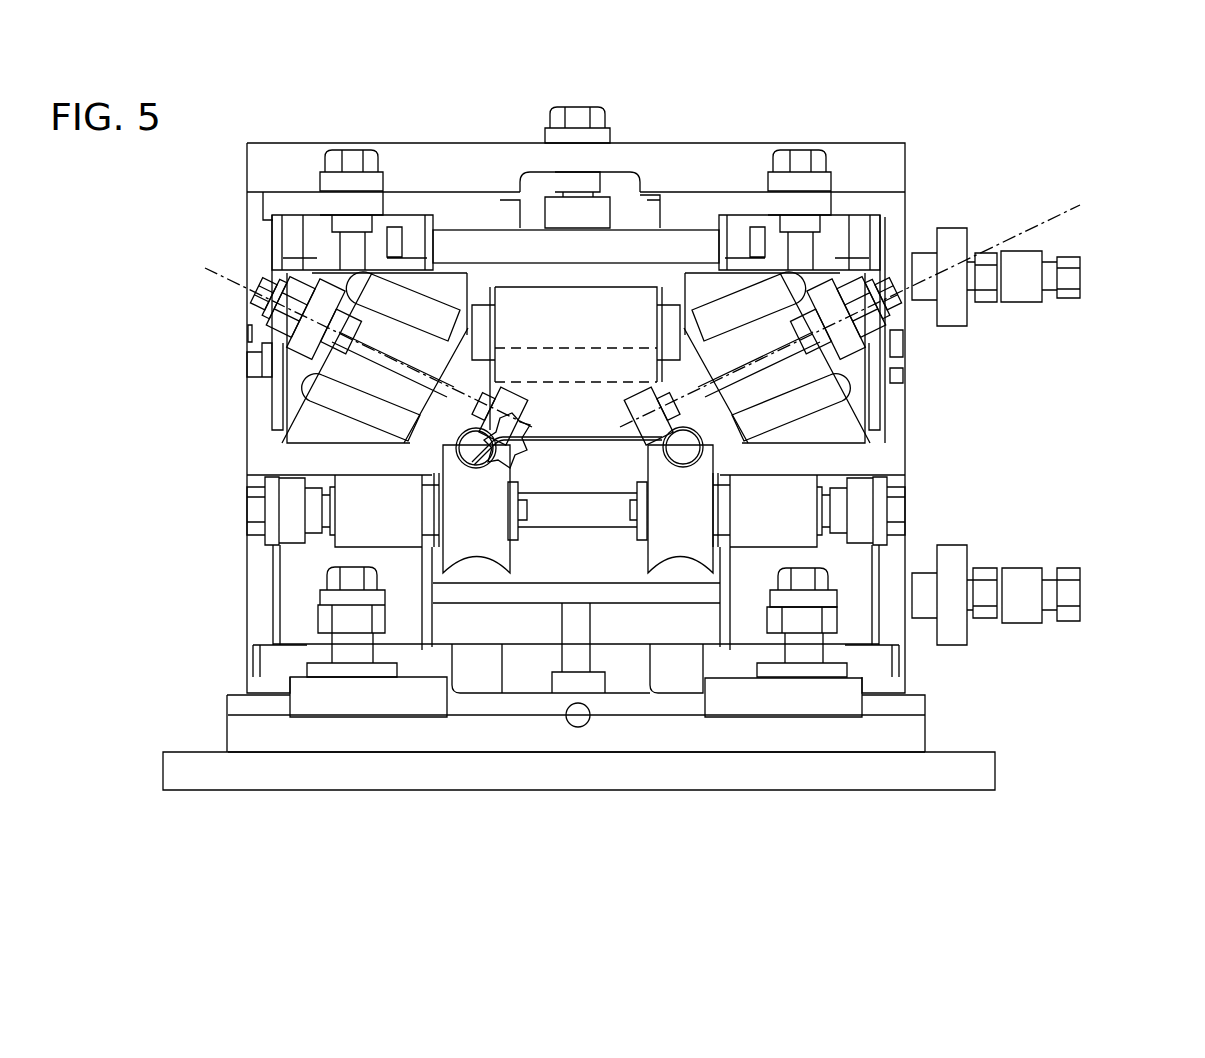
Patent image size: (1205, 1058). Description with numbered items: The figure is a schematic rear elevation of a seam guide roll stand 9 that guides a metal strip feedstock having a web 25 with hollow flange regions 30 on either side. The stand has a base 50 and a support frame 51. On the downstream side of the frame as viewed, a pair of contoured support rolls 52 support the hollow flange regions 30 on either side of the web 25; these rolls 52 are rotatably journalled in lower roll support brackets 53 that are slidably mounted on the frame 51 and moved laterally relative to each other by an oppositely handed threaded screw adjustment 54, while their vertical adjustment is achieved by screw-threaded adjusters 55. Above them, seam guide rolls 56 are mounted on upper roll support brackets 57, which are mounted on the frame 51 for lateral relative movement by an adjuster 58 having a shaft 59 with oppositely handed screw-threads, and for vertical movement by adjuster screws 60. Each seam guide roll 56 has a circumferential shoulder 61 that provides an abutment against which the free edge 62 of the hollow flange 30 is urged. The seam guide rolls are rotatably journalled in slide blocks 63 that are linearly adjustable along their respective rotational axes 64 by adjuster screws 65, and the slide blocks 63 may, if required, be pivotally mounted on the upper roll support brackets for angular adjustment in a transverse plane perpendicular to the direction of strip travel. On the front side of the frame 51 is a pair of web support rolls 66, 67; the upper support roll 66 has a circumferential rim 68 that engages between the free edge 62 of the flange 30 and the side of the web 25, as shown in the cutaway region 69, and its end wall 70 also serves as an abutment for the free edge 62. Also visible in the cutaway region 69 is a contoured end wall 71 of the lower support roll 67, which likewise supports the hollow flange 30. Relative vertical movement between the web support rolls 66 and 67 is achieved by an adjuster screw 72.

The seam guide roll stand 9 is at (1098, 145).
The web 25 is at (622, 440).
The hollow flange 30 is at (445, 442).
The base 50 is at (313, 765).
The support frame 51 is at (420, 165).
The contoured support rolls 52 is at (490, 553).
The lower roll support brackets 53 is at (315, 580).
The threaded screw adjustment 54 is at (1025, 600).
The screw-threaded adjusters 55 is at (805, 583).
The seam guide rolls 56 is at (655, 345).
The upper roll support brackets 57 is at (880, 441).
The adjuster 58 is at (1065, 285).
The shaft 59 is at (660, 240).
The adjuster screws 60 is at (345, 162).
The circumferential shoulder 61 is at (657, 462).
The free edge 62 is at (455, 445).
The slide blocks 63 is at (780, 330).
The rotational axes 64 is at (1000, 243).
The adjuster screws 65 is at (880, 330).
The upper support roll 66 is at (547, 323).
The lower support roll 67 is at (555, 560).
The circumferential rim 68 is at (488, 430).
The cutaway region 69 is at (512, 452).
The end wall 70 is at (335, 378).
The contoured end wall 71 is at (515, 458).
The adjuster screw 72 is at (585, 120).